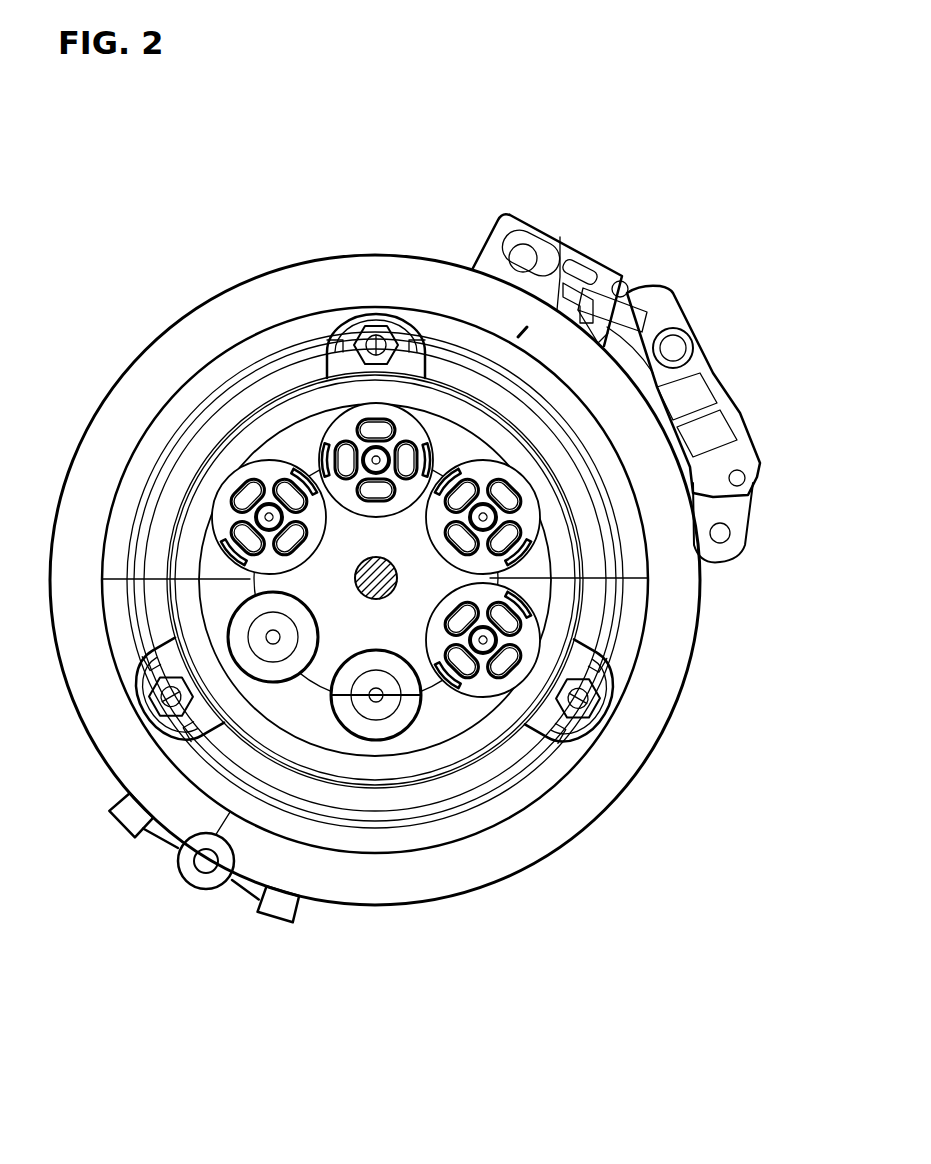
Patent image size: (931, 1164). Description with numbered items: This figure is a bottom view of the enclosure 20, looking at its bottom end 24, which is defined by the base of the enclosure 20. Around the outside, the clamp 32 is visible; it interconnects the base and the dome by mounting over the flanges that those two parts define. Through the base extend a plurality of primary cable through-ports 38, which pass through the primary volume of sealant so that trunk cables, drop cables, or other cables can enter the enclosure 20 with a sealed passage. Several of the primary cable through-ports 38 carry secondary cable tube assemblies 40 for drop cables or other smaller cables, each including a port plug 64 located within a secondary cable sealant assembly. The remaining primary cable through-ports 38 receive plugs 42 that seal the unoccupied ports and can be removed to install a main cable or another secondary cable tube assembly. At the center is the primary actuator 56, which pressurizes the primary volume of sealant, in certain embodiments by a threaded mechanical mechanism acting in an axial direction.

The enclosure 20 is at (538, 128).
The bottom end 24 is at (110, 858).
The clamp 32 is at (700, 343).
The primary cable through-ports 38 is at (380, 742).
The secondary cable tube assemblies 40 is at (575, 620).
The plugs 42 is at (248, 636).
The primary actuator 56 is at (393, 602).
The port plug 64 is at (528, 650).